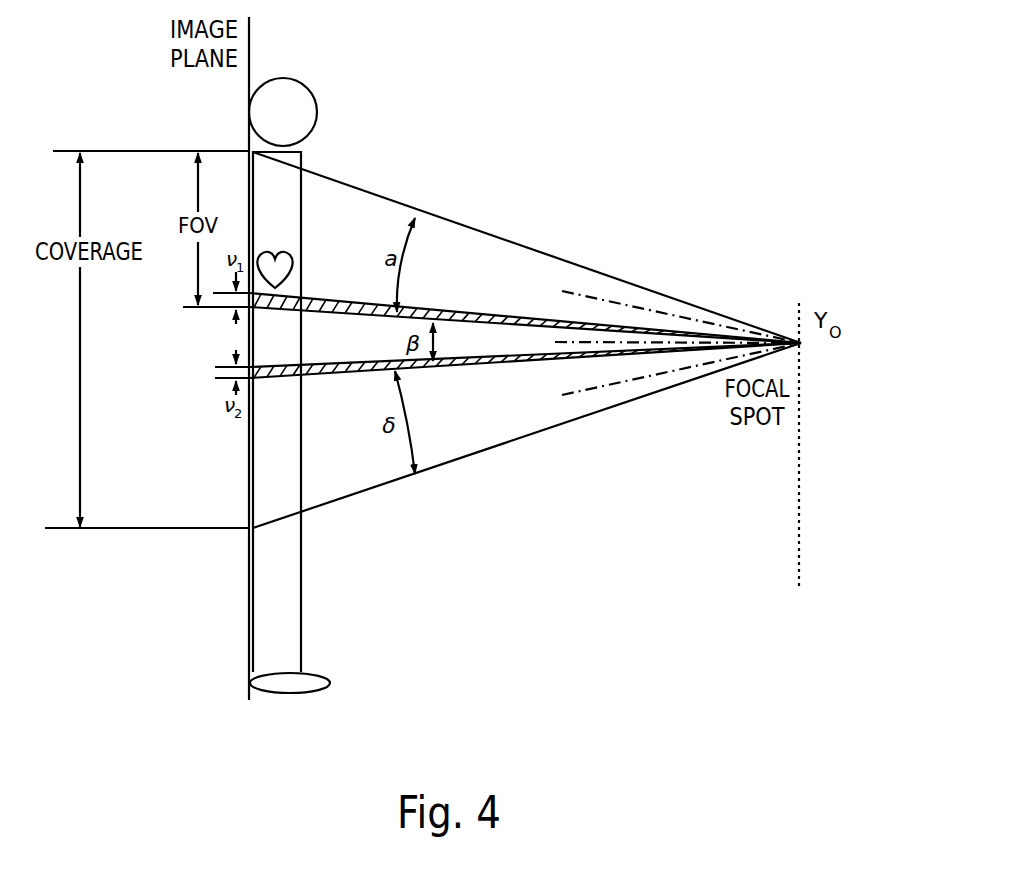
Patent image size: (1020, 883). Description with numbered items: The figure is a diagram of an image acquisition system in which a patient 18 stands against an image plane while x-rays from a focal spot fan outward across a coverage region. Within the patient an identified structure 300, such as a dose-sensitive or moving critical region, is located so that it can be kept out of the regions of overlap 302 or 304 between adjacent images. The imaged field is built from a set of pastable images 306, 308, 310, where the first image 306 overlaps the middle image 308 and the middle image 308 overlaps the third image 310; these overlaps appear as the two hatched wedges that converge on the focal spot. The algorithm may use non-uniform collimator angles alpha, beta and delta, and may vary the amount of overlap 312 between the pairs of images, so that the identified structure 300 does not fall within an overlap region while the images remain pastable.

The patient 18 is at (341, 131).
The identified structure 300 is at (309, 254).
The region of overlap 302 is at (343, 299).
The region of overlap 304 is at (332, 385).
The image 306 is at (239, 205).
The image 308 is at (236, 337).
The image 310 is at (229, 488).
The amount of overlap 312 is at (209, 312).